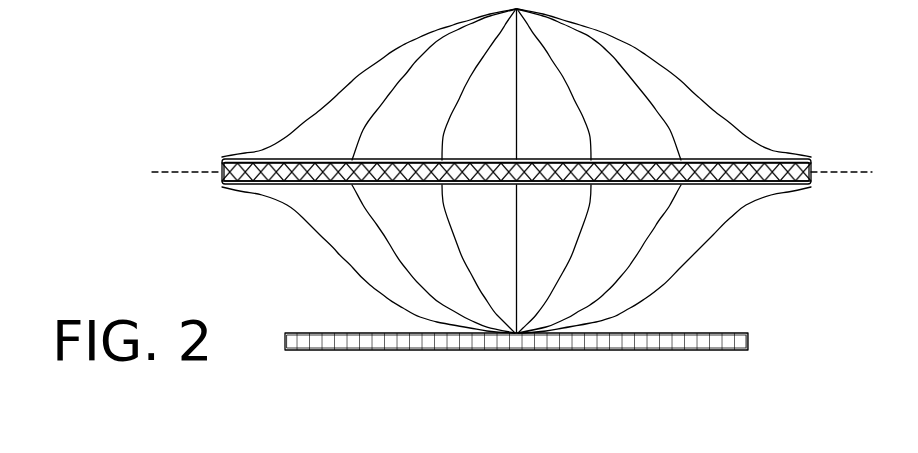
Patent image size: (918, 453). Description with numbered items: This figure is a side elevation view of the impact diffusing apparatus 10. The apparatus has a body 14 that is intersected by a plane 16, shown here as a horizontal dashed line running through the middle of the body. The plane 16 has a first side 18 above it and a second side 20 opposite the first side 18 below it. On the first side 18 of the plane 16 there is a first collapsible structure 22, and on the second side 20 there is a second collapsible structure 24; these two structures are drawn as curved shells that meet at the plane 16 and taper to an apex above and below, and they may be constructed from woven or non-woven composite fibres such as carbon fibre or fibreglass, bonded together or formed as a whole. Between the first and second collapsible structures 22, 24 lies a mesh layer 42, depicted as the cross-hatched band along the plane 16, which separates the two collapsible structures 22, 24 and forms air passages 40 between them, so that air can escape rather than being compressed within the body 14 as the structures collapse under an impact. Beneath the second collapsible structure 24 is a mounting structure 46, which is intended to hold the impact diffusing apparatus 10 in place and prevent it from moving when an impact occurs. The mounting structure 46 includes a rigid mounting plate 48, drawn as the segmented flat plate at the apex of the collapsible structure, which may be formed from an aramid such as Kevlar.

The impact diffusing apparatus 10 is at (174, 48).
The body 14 is at (685, 100).
The plane 16 is at (190, 172).
The first side 18 is at (193, 148).
The second side 20 is at (819, 212).
The first collapsible structure 22 is at (392, 67).
The second collapsible structure 24 is at (372, 241).
The air passages 40 is at (677, 173).
The mesh layer 42 is at (593, 173).
The mounting structure 46 is at (628, 340).
The rigid mounting plate 48 is at (575, 342).